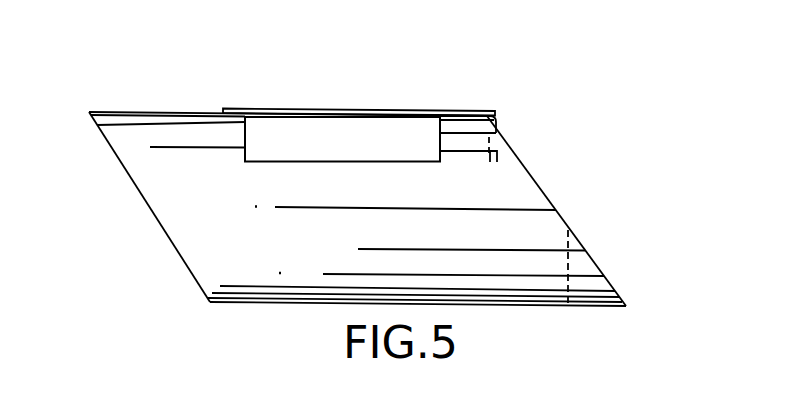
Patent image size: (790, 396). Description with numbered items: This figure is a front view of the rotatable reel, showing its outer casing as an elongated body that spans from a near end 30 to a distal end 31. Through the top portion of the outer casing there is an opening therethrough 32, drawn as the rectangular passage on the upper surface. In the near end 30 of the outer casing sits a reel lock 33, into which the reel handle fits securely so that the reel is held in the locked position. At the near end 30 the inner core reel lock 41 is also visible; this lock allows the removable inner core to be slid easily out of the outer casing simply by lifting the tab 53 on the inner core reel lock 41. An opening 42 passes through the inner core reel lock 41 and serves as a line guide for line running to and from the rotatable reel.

The near end of the outer casing 30 is at (563, 222).
The distal end of the outer casing 31 is at (128, 175).
The opening 32 is at (245, 140).
The reel lock 33 is at (570, 266).
The inner core reel lock 41 is at (497, 122).
The opening through the inner reel core lock 42 is at (340, 111).
The tab 53 is at (498, 150).